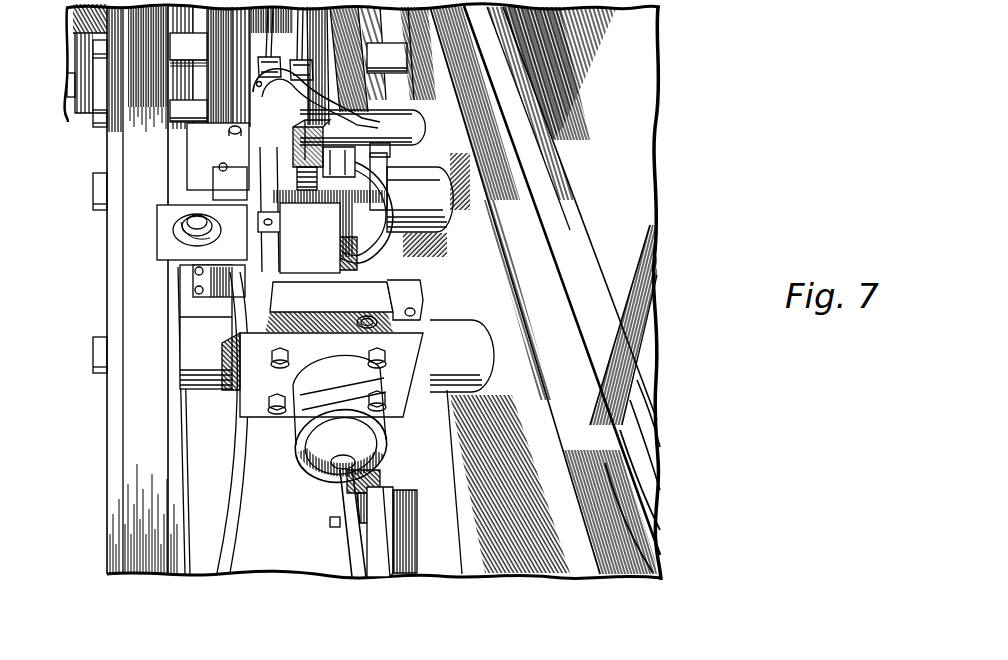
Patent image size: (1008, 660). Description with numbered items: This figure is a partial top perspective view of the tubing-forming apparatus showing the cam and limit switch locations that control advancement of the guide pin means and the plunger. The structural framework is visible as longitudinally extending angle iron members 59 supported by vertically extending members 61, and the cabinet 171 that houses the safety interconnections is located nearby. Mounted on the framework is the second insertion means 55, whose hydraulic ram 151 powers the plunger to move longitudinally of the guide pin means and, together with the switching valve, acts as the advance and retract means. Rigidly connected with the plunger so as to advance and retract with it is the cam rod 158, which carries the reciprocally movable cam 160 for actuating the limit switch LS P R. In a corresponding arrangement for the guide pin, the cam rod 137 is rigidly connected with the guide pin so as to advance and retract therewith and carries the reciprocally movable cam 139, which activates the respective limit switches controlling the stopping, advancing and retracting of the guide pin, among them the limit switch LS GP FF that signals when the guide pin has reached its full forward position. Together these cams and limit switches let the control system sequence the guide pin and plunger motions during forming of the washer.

The second insertion means 55 is at (313, 250).
The angle iron members 59 is at (568, 350).
The vertically extending members 61 is at (518, 110).
The cabinet 171 is at (616, 196).
The cam rod 158 is at (277, 187).
The cam 160 is at (347, 210).
The limit switch LS PR LS P R is at (215, 250).
The hydraulic ram 151 is at (340, 392).
The cam 139 is at (340, 477).
The cam rod 137 is at (367, 557).
The limit switch LS GP FF is at (383, 484).